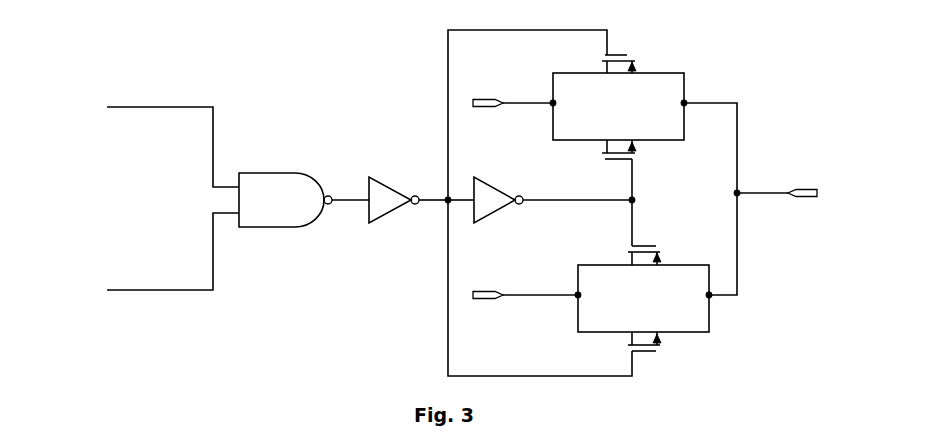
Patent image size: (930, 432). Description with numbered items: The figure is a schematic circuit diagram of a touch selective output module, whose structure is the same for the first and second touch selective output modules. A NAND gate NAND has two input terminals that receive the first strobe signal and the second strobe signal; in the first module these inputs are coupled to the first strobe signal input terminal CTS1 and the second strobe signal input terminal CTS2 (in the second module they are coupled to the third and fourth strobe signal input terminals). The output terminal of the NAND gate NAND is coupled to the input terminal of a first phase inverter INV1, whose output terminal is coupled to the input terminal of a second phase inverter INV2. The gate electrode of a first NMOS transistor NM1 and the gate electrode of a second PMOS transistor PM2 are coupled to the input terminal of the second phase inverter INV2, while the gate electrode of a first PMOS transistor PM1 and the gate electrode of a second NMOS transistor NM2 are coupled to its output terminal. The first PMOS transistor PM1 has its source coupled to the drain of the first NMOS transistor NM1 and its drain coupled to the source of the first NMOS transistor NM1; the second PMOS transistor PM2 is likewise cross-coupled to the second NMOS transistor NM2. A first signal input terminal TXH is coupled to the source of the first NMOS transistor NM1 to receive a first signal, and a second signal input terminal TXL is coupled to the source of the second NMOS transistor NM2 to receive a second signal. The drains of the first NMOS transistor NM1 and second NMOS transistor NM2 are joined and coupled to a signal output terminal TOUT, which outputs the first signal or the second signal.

The first strobe signal input terminal CTS1 is at (148, 138).
The second strobe signal input terminal CTS2 is at (148, 262).
The NAND gate NAND is at (271, 180).
The first phase inverter INV1 is at (381, 193).
The second phase inverter INV2 is at (484, 193).
The first signal input terminal TXH is at (511, 93).
The second signal input terminal TXL is at (524, 285).
The signal output terminal TOUT is at (781, 181).
The first NMOS transistor NM1 is at (619, 77).
The first PMOS transistor PM1 is at (619, 138).
The second NMOS transistor NM2 is at (645, 268).
The second PMOS transistor PM2 is at (644, 330).